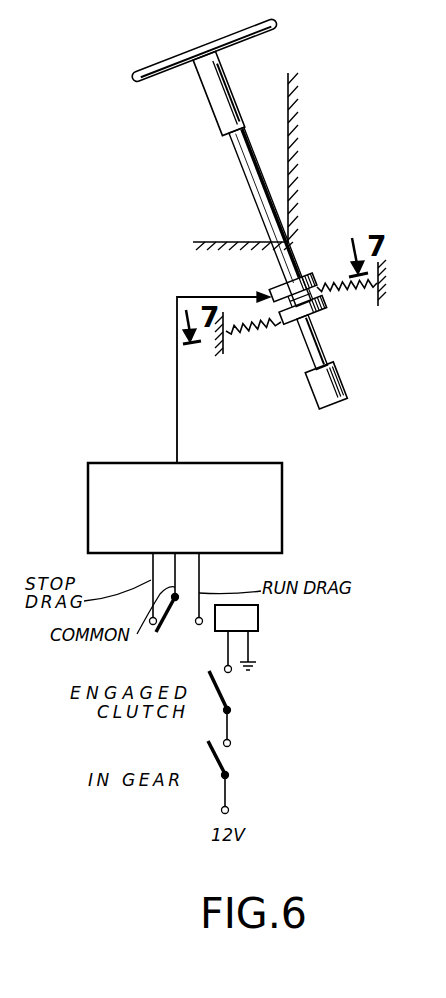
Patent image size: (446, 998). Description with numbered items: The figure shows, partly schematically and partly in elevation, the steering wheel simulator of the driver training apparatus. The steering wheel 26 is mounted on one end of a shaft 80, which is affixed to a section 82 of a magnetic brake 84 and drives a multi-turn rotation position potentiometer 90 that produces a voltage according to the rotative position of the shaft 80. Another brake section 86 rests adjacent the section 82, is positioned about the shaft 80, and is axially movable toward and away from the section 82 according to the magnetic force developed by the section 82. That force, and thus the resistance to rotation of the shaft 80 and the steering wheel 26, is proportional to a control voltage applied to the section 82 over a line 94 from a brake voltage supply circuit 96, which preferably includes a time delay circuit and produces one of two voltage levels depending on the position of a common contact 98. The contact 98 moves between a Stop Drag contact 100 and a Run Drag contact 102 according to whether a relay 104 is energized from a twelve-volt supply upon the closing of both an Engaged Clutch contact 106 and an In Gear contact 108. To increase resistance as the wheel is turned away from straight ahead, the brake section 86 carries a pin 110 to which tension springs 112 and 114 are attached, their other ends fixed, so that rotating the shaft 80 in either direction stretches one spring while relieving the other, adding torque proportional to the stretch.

The steering wheel 26 is at (146, 72).
The shaft 80 is at (244, 168).
The section of magnetic brake 82 is at (304, 274).
The magnetic brake 84 is at (277, 312).
The brake section 86 is at (296, 326).
The multi-turn rotation position potentiometer 90 is at (313, 398).
The line 94 is at (177, 383).
The brake voltage supply circuit 96 is at (88, 505).
The common contact 98 is at (163, 623).
The Stop Drag contact 100 is at (152, 569).
The Run Drag contact 102 is at (199, 571).
The relay 104 is at (258, 619).
The Engaged Clutch contact 106 is at (222, 692).
The In Gear contact 108 is at (220, 760).
The pin 110 is at (325, 298).
The tension spring 112 is at (248, 337).
The tension spring 114 is at (378, 301).